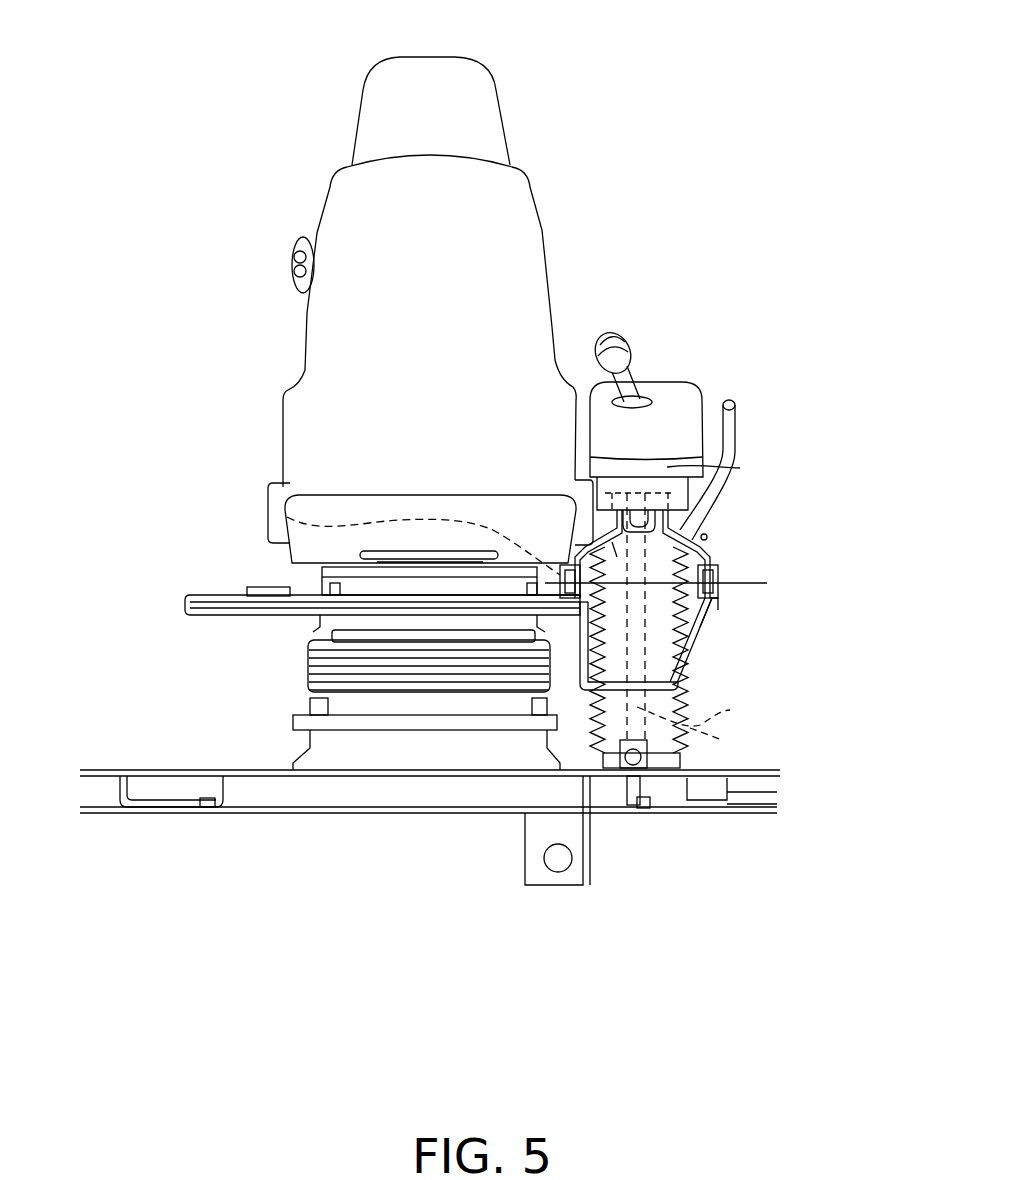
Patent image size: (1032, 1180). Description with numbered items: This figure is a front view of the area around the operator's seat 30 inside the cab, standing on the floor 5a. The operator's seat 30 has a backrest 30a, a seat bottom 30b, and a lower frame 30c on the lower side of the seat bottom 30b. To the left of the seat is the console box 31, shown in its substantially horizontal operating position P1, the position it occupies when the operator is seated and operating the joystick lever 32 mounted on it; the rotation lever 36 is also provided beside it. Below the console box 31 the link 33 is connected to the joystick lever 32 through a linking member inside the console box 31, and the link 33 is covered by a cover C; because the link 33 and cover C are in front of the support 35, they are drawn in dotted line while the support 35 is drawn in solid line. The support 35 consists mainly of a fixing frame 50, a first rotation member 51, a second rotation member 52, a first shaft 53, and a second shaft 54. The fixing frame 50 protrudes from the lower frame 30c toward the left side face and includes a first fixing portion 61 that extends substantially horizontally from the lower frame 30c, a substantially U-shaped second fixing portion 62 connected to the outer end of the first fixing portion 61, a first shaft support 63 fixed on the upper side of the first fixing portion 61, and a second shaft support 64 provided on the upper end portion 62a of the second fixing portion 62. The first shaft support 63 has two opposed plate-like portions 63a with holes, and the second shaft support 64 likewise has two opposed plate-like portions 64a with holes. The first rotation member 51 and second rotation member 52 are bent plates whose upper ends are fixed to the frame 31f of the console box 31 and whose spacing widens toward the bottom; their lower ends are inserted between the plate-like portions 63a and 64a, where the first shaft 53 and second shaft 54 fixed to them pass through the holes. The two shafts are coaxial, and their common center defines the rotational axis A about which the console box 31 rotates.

The operator's seat 30 is at (343, 128).
The backrest 30a is at (338, 230).
The seat bottom 30b is at (317, 503).
The lower frame 30c is at (340, 613).
The console box 31 is at (692, 390).
The frame 31f is at (740, 468).
The joystick lever 32 is at (615, 335).
The link 33 is at (677, 658).
The support 35 is at (710, 547).
The rotation lever 36 is at (737, 420).
The fixing frame 50 is at (612, 695).
The first rotation member 51 is at (617, 557).
The second rotation member 52 is at (707, 533).
The first shaft 53 is at (272, 507).
The second shaft 54 is at (717, 575).
The first fixing portion 61 is at (575, 602).
The second fixing portion 62 is at (700, 647).
The upper end portion 62a is at (715, 610).
The first shaft support 63 is at (565, 600).
The plate-like portions 63a is at (563, 602).
The second shaft support 64 is at (718, 597).
The plate-like portions 64a is at (722, 556).
The floor 5a is at (250, 770).
The rotational axis A is at (668, 582).
The cover C is at (698, 722).
The operating position P1 is at (668, 395).